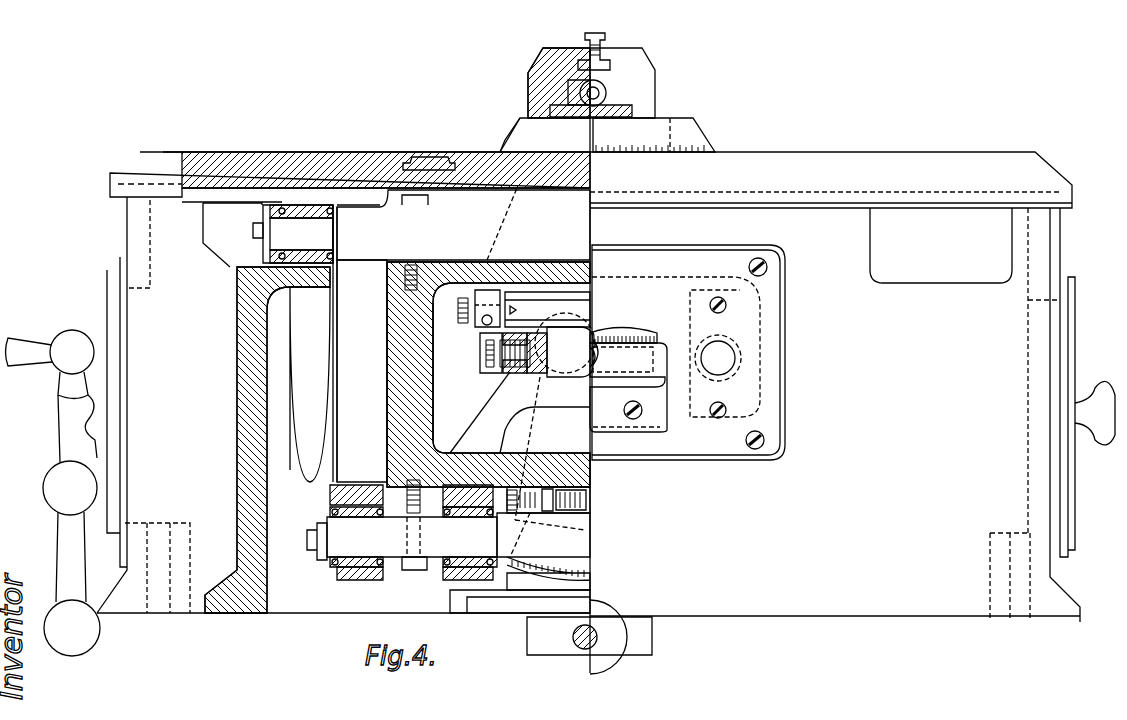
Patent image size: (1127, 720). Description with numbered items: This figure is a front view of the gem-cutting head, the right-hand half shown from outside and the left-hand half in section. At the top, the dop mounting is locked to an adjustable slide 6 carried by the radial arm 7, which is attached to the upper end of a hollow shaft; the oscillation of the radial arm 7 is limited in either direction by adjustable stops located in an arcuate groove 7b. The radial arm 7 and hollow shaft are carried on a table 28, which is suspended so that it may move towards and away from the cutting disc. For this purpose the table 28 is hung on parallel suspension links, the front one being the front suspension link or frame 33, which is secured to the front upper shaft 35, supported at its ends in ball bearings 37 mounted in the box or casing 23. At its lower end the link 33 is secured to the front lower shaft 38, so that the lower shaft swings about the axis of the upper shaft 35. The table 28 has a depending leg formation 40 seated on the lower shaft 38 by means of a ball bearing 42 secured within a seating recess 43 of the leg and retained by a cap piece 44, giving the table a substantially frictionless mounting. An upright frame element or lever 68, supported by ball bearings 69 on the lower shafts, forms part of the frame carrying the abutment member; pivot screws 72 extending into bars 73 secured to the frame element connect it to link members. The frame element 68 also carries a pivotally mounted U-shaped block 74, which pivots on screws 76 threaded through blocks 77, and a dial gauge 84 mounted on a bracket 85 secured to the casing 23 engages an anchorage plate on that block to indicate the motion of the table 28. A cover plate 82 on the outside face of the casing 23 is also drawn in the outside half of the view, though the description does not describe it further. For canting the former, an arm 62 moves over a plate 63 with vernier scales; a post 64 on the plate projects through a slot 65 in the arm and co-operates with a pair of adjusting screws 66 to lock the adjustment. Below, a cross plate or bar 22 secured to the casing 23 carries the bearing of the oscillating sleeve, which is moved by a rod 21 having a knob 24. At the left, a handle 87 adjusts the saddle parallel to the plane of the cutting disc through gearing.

The adjustable slide 6 is at (630, 95).
The radial arm 7 is at (690, 128).
The arcuate groove 7b is at (425, 165).
The table 28 is at (762, 175).
The front upper shaft 35 is at (463, 224).
The ball bearings 37 is at (310, 280).
The box or casing 23 is at (247, 440).
The depending leg formation 40 is at (362, 371).
The handle 87 is at (68, 440).
The front suspension link or frame 33 is at (415, 412).
The frame element or lever 68 is at (466, 371).
The bar 73 is at (547, 309).
The pivot screw 72 is at (465, 327).
The screw 76 is at (486, 370).
The block 77 is at (520, 368).
The U-shaped block 74 is at (540, 377).
The dial gauge 84 is at (628, 332).
The bracket 85 is at (628, 387).
The cover plate 82 is at (720, 356).
The seating recess 43 is at (333, 497).
The front lower shaft 38 is at (392, 540).
The ball bearing 42 is at (330, 560).
The cap piece 44 is at (356, 582).
The ball bearings 69 is at (442, 562).
The post 64 is at (592, 500).
The slot 65 is at (572, 512).
The adjusting screws 66 is at (543, 535).
The arm 62 is at (550, 537).
The plate 63 is at (582, 576).
The cross plate or bar 22 is at (500, 600).
The rod 21 is at (582, 645).
The knob 24 is at (612, 655).